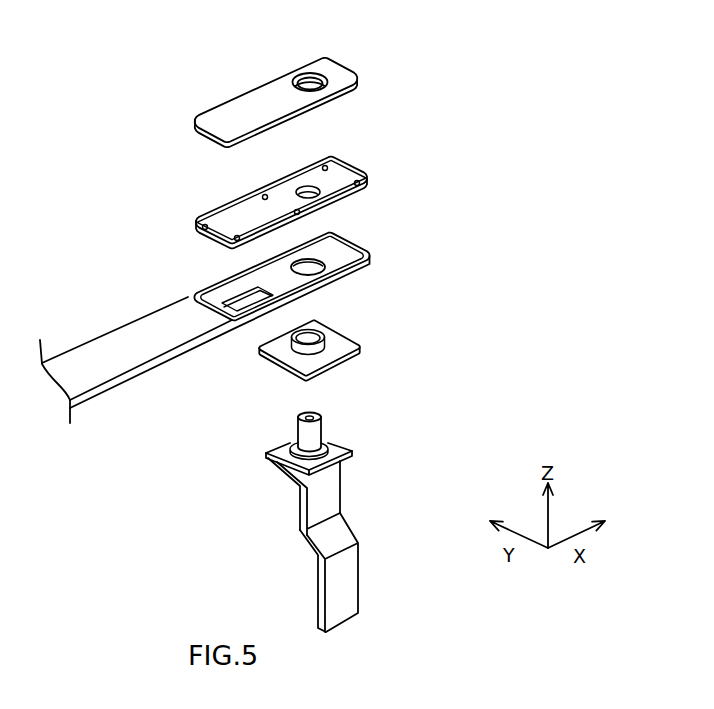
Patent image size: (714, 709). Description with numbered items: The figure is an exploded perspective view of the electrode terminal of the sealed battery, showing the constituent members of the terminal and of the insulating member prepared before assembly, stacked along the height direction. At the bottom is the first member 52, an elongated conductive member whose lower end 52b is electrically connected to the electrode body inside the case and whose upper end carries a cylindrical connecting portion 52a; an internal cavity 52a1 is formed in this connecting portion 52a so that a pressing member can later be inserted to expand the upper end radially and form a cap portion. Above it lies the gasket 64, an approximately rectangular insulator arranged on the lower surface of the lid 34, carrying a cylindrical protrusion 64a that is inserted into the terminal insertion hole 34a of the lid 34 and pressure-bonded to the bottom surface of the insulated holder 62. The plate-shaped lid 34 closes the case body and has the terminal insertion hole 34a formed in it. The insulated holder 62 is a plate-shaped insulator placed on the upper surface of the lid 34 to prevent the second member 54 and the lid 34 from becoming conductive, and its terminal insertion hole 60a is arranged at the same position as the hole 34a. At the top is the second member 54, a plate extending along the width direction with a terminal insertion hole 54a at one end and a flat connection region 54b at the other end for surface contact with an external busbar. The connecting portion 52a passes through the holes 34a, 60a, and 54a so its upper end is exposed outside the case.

The second member 54 is at (297, 85).
The terminal insertion hole 54a is at (316, 74).
The connection region 54b is at (237, 112).
The insulated holder 62 is at (374, 178).
The terminal insertion hole 60a is at (318, 186).
The lid 34 is at (225, 319).
The terminal insertion hole 34a is at (317, 261).
The gasket 64 is at (322, 353).
The cylindrical protrusion 64a is at (327, 344).
The first member 52 is at (353, 509).
The connecting portion 52a is at (365, 423).
The internal cavity 52a1 is at (313, 413).
The lower end 52b is at (350, 605).